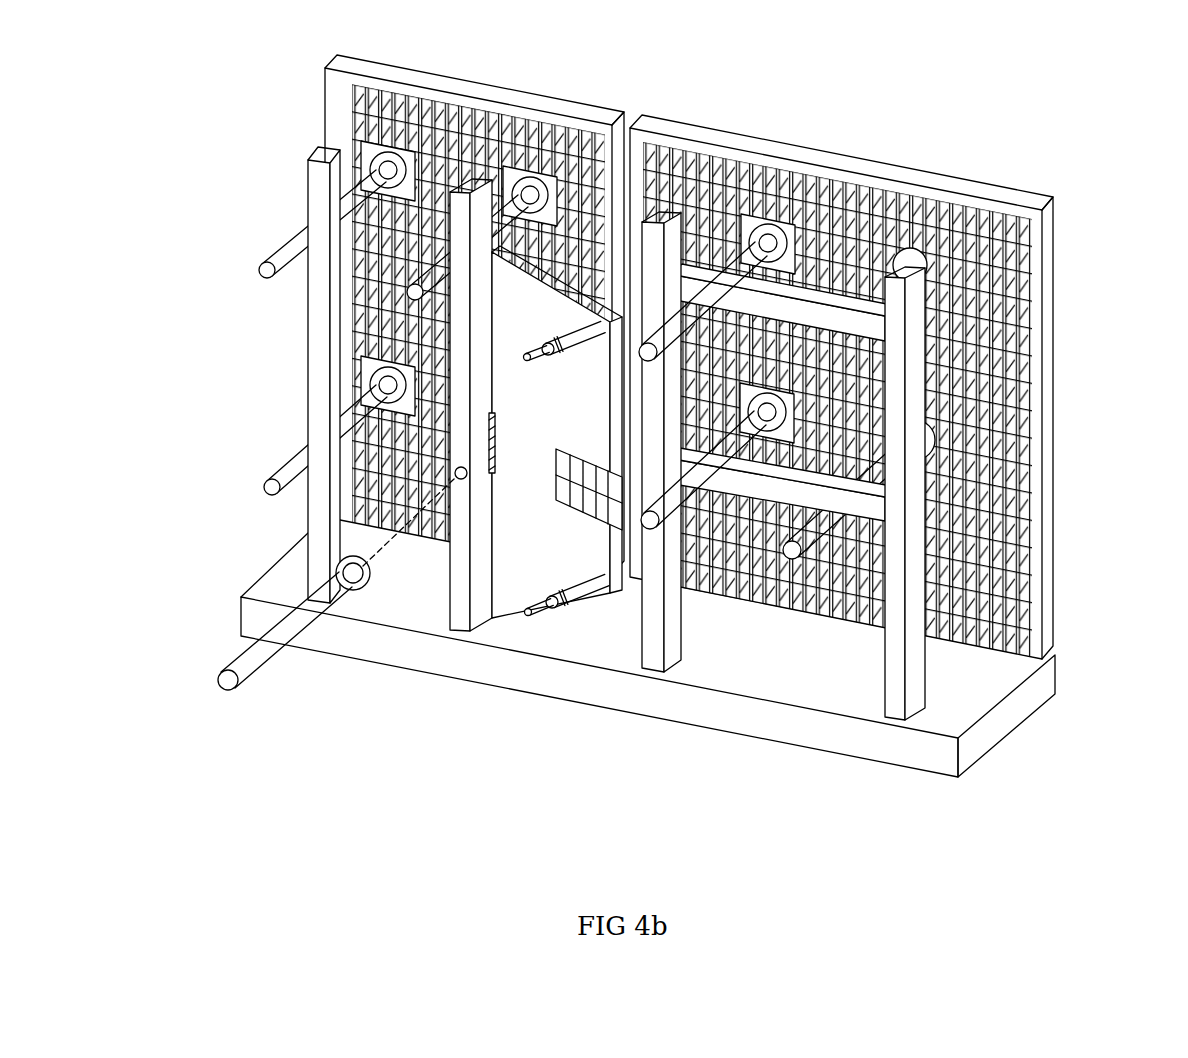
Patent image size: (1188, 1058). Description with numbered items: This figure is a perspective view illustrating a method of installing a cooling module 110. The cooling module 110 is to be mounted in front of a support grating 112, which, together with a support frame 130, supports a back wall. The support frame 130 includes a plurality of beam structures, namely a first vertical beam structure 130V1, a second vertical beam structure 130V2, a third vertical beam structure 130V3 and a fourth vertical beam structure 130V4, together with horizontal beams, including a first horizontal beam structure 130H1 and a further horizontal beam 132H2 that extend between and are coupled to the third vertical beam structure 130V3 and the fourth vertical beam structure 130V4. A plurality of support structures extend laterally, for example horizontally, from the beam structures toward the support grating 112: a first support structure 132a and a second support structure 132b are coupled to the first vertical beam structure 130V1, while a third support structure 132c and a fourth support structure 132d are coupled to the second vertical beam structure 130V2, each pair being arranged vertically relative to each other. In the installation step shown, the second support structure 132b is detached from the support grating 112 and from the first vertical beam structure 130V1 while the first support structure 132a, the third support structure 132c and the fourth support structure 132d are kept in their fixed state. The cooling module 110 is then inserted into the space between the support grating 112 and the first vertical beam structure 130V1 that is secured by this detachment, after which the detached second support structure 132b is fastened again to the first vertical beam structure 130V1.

The cooling module 110 is at (530, 518).
The support grating 112 is at (375, 290).
The support frame 130 is at (300, 372).
The first vertical beam structure 130V1 is at (470, 185).
The second vertical beam structure 130V2 is at (325, 148).
The third vertical beam structure 130V3 is at (660, 218).
The fourth vertical beam structure 130V4 is at (905, 265).
The first horizontal beam structure 130H1 is at (805, 320).
The second horizontal bar 132H2 is at (755, 485).
The first support structure 132a is at (520, 195).
The second support structure 132b is at (300, 625).
The third support structure 132c is at (360, 185).
The fourth support structure 132d is at (358, 405).